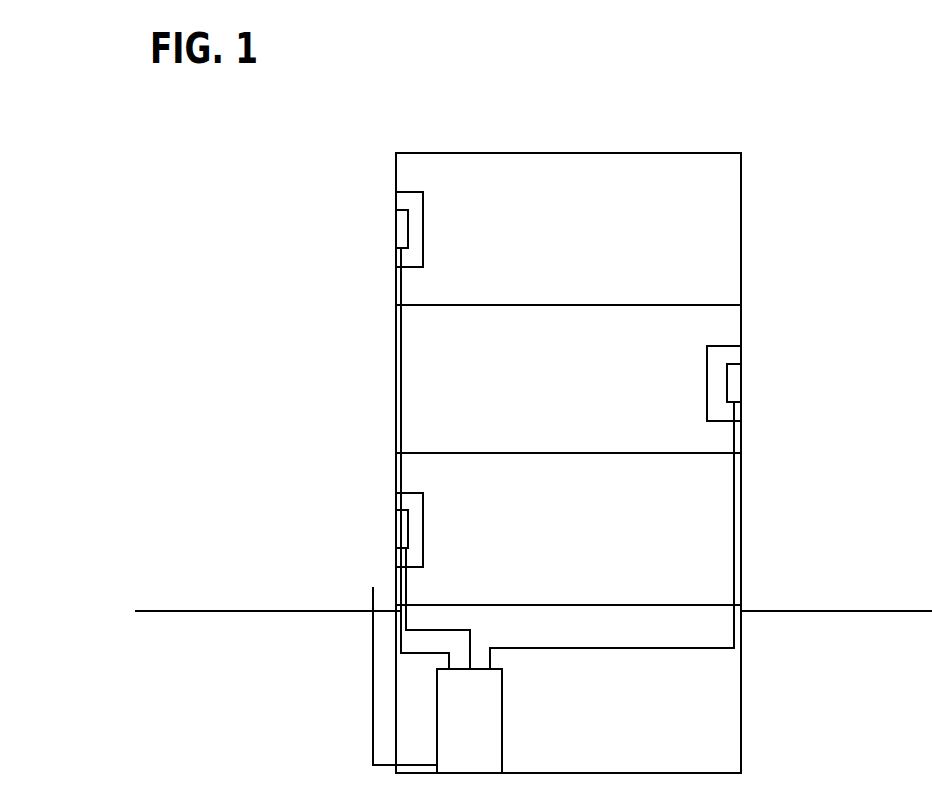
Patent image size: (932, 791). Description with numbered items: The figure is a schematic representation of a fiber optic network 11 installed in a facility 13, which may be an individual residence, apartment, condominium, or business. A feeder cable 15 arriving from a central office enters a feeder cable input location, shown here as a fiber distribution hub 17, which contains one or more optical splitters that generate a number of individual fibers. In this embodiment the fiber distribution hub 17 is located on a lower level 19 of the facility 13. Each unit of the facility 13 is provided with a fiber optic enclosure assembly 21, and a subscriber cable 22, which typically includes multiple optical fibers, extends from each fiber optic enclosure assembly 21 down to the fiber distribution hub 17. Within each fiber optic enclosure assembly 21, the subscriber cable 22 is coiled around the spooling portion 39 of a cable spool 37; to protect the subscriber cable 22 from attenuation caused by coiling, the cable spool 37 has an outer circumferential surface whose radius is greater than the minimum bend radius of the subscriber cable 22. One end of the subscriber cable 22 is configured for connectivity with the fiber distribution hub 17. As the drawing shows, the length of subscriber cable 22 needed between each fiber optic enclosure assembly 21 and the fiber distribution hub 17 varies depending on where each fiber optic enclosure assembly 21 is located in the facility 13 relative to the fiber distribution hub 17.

The fiber optic network 11 is at (214, 276).
The facility 13 is at (741, 197).
The feeder cable 15 is at (371, 650).
The fiber distribution hub 17 is at (502, 722).
The lower level 19 is at (741, 715).
The fiber optic enclosure assembly 21 is at (447, 242).
The subscriber cable 22 is at (402, 293).
The cable spool 37 is at (420, 209).
The spooling portion 39 is at (401, 208).